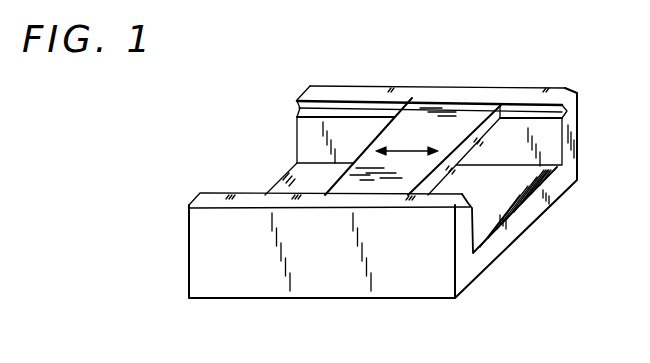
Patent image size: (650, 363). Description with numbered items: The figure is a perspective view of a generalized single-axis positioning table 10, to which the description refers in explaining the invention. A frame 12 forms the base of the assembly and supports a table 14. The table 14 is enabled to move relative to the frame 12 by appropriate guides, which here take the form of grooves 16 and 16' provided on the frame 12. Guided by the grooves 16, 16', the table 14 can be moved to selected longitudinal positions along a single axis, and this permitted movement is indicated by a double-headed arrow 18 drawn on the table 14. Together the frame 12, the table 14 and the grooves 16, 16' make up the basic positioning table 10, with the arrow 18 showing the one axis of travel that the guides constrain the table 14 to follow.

The single-axis positioning table 10 is at (526, 73).
The frame 12 is at (463, 250).
The table 14 is at (430, 110).
The groove 16 is at (539, 135).
The groove 16' is at (509, 210).
The double-headed arrow 18 is at (414, 150).